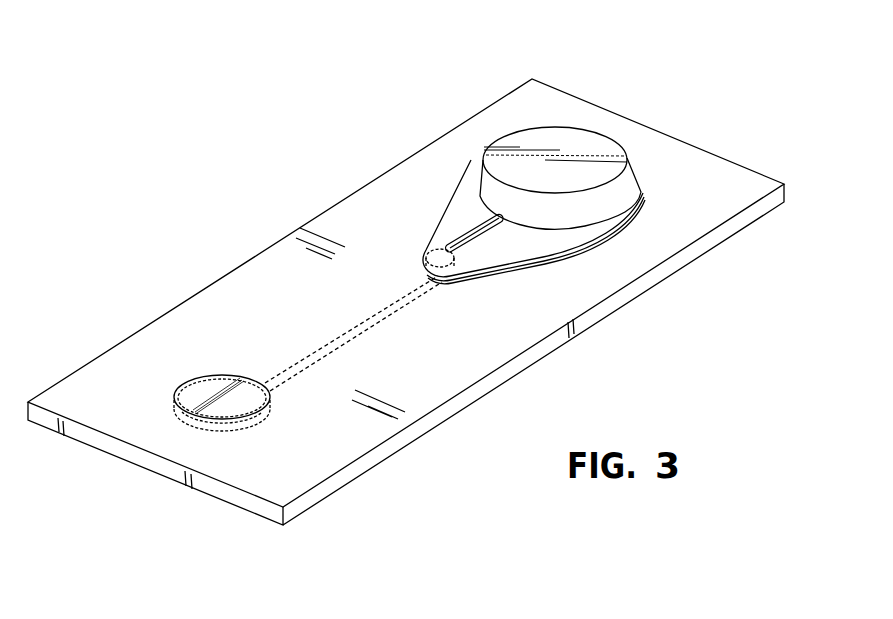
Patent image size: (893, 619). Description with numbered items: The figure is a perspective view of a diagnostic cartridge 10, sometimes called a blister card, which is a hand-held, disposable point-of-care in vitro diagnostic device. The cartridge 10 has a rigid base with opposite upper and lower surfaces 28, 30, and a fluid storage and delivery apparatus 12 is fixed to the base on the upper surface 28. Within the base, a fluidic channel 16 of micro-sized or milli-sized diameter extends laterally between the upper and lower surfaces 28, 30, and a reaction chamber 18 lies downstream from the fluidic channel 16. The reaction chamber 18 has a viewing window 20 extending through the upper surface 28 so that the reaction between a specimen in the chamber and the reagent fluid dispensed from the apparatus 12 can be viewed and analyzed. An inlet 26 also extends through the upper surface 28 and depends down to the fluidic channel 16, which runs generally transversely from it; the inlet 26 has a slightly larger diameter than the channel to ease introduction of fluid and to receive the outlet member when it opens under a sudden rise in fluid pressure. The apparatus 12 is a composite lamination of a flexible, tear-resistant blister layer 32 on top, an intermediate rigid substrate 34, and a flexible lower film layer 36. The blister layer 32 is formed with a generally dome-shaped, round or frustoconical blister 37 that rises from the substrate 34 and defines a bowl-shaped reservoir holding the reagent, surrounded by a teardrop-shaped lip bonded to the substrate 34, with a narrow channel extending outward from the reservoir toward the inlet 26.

The diagnostic cartridge 10 is at (603, 55).
The fluid storage and delivery apparatus 12 is at (441, 192).
The fluidic channel 16 is at (378, 318).
The reaction chamber 18 is at (242, 427).
The viewing window 20 is at (208, 390).
The inlet 26 is at (493, 273).
The upper surface 28 is at (717, 187).
The lower surface 30 is at (692, 262).
The blister layer 32 is at (588, 150).
The substrate 34 is at (575, 247).
The lower film layer 36 is at (538, 260).
The blister 37 is at (627, 157).